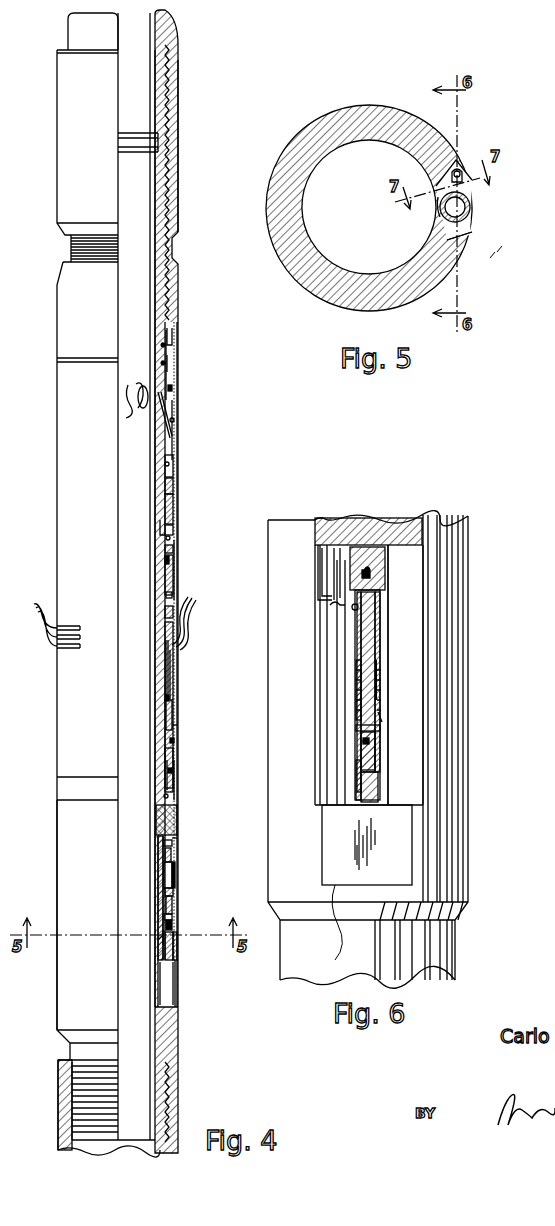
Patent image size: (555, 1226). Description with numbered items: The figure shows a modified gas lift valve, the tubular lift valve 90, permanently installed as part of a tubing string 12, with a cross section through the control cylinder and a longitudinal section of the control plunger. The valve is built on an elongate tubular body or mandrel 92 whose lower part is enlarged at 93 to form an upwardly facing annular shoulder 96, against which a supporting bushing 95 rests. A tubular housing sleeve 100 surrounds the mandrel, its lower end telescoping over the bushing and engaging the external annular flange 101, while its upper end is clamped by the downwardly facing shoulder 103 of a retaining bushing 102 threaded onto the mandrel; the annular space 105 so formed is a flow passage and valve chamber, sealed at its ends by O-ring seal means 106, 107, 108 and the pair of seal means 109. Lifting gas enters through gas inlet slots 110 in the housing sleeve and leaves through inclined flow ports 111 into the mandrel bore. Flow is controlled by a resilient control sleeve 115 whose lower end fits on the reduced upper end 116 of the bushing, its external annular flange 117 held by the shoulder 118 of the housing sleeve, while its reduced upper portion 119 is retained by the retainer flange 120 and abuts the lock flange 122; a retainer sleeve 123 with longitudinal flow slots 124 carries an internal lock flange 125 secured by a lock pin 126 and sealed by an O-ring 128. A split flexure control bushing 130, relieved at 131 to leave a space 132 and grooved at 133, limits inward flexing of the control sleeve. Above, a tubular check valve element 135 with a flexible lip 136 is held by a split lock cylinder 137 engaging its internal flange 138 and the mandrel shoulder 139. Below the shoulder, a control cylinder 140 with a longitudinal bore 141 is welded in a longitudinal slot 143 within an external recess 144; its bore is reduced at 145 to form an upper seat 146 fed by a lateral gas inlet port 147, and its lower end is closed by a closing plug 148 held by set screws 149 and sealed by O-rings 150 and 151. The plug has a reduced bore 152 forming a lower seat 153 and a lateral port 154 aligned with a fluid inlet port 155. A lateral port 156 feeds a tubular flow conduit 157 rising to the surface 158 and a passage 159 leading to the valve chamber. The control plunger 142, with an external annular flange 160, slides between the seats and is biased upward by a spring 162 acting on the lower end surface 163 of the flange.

In FIG. 4, the tubing string 12 is at (172, 44).
In FIG. 4, the tubular lift valve 90 is at (47, 401).
In FIG. 4, the tubular body or mandrel 92 is at (62, 978).
In FIG. 4, the enlarged lower portion of valve body 93 is at (178, 816).
In FIG. 5, the enlarged lower portion of valve body 93 is at (270, 207).
In FIG. 4, the supporting bushing 95 is at (176, 771).
In FIG. 4, the upwardly facing annular shoulder 96 is at (176, 797).
In FIG. 4, the tubular sleeve or housing member 100 is at (173, 430).
In FIG. 4, the external annular flange 101 is at (176, 782).
In FIG. 4, the tubular retaining bushing 102 is at (172, 345).
In FIG. 4, the downwardly facing shoulder 103 is at (173, 366).
In FIG. 4, the annular space 105 is at (173, 420).
In FIG. 4, the O-ring seal means 106 is at (176, 794).
In FIG. 4, the O-ring seal means 107 is at (176, 760).
In FIG. 4, the O-ring seal means 108 is at (172, 389).
In FIG. 4, the O-ring seal means 109 is at (160, 344).
In FIG. 4, the gas inlet slots 110 is at (121, 615).
In FIG. 4, the flow ports 111 is at (158, 406).
In FIG. 4, the control sleeve or closure member 115 is at (176, 682).
In FIG. 4, the reduced upper end of supporting bushing 116 is at (176, 720).
In FIG. 4, the external annular flange 117 is at (176, 744).
In FIG. 4, the downwardly facing annular shoulder 118 is at (176, 732).
In FIG. 4, the upper portion of control sleeve 119 is at (166, 612).
In FIG. 4, the retainer flange 120 is at (166, 595).
In FIG. 4, the lock flange 122 is at (165, 560).
In FIG. 4, the retainer sleeve 123 is at (174, 549).
In FIG. 4, the flow slots 124 is at (174, 568).
In FIG. 4, the internal annular lock flange 125 is at (173, 531).
In FIG. 4, the lock pin 126 is at (173, 538).
In FIG. 4, the O-ring or seal means 128 is at (174, 558).
In FIG. 4, the flexure control bushing 130 is at (176, 695).
In FIG. 4, the relieved upper portion of flexure sleeve 131 is at (176, 668).
In FIG. 4, the space 132 is at (176, 650).
In FIG. 4, the flow grooves 133 is at (176, 706).
In FIG. 4, the check valve element 135 is at (173, 502).
In FIG. 4, the flexible lip 136 is at (173, 483).
In FIG. 4, the split lock ring or cylinder 137 is at (165, 464).
In FIG. 4, the internal annular flange 138 is at (158, 532).
In FIG. 4, the downwardly facing external annular shoulder 139 is at (172, 456).
In FIG. 4, the control cylinder 140 is at (158, 830).
In FIG. 5, the control cylinder 140 is at (468, 205).
In FIG. 6, the control cylinder 140 is at (372, 638).
In FIG. 4, the longitudinal bore 141 is at (178, 850).
In FIG. 5, the longitudinal bore 141 is at (470, 214).
In FIG. 6, the longitudinal bore 141 is at (380, 610).
In FIG. 4, the control plunger or piston 142 is at (178, 863).
In FIG. 6, the control plunger or piston 142 is at (378, 626).
In FIG. 4, the longitudinal slot 143 is at (178, 830).
In FIG. 4, the external recess 144 is at (168, 988).
In FIG. 5, the external recess 144 is at (462, 238).
In FIG. 6, the external recess 144 is at (400, 743).
In FIG. 6, the reduced bore portion 145 is at (362, 582).
In FIG. 6, the upper annular seat 146 is at (385, 588).
In FIG. 4, the lateral gas inlet port 147 is at (176, 838).
In FIG. 6, the closing plug 148 is at (381, 778).
In FIG. 4, the set screws 149 is at (182, 957).
In FIG. 6, the set screws 149 is at (382, 760).
In FIG. 4, the upper O-ring seal means 150 is at (160, 932).
In FIG. 6, the upper O-ring seal means 150 is at (385, 718).
In FIG. 4, the lower O-ring seal means 151 is at (178, 944).
In FIG. 6, the lower O-ring seal means 151 is at (380, 735).
In FIG. 4, the reduced bore 152 is at (178, 922).
In FIG. 6, the reduced bore 152 is at (356, 726).
In FIG. 4, the lower annular seat 153 is at (178, 911).
In FIG. 6, the lower annular seat 153 is at (376, 710).
In FIG. 4, the lateral port 154 is at (178, 933).
In FIG. 6, the lateral port 154 is at (362, 742).
In FIG. 4, the fluid inlet port 155 is at (158, 940).
In FIG. 5, the fluid inlet port 155 is at (437, 212).
In FIG. 6, the lateral port 156 is at (352, 609).
In FIG. 5, the tubular flow conduit 157 is at (460, 180).
In FIG. 6, the tubular flow conduit 157 is at (336, 576).
In FIG. 6, the downwardly facing surface 158 is at (318, 556).
In FIG. 6, the passage 159 is at (337, 520).
In FIG. 4, the external annular flange 160 is at (178, 876).
In FIG. 6, the external annular flange 160 is at (372, 650).
In FIG. 4, the spring 162 is at (178, 899).
In FIG. 6, the spring 162 is at (381, 676).
In FIG. 4, the lower end surface of flange 163 is at (178, 888).
In FIG. 6, the lower end surface of flange 163 is at (381, 664).